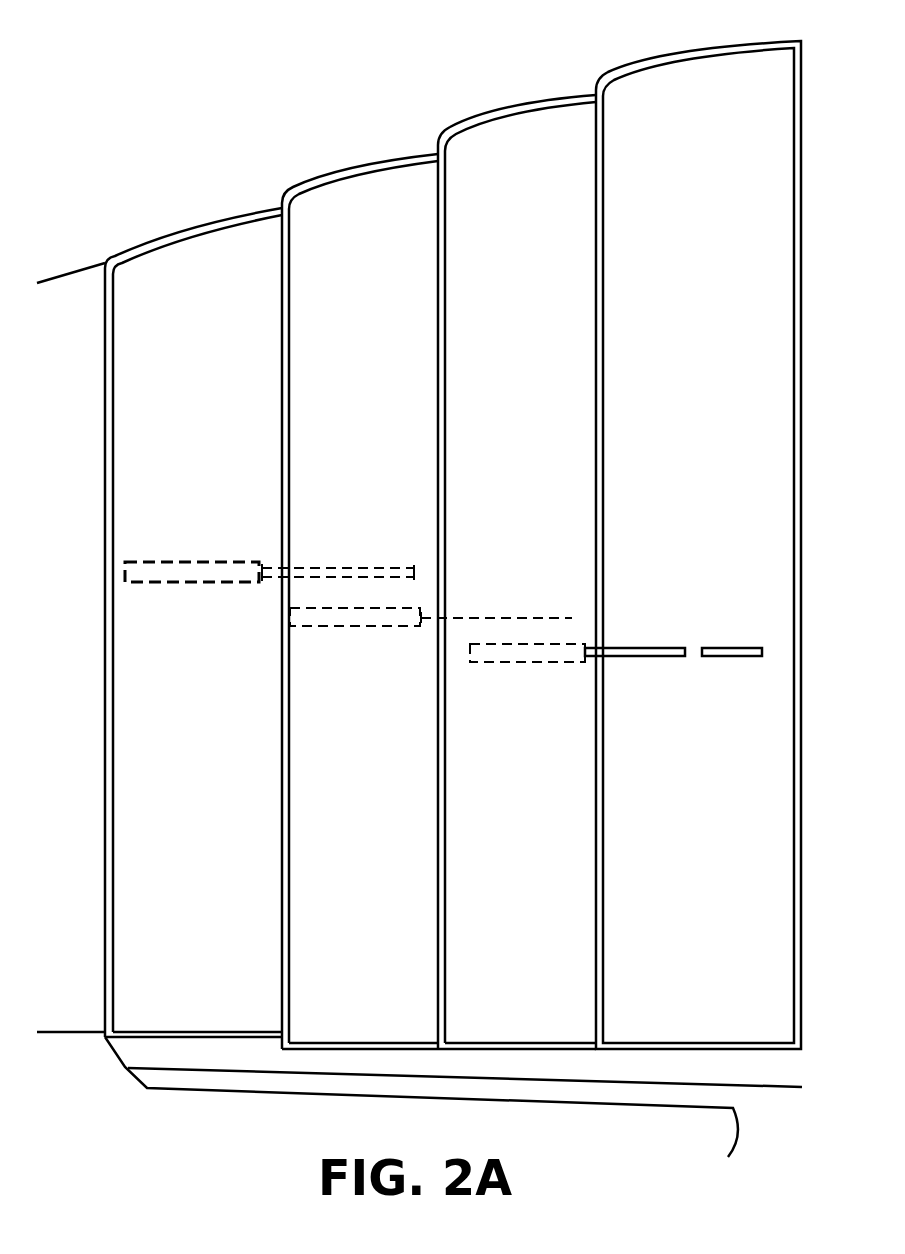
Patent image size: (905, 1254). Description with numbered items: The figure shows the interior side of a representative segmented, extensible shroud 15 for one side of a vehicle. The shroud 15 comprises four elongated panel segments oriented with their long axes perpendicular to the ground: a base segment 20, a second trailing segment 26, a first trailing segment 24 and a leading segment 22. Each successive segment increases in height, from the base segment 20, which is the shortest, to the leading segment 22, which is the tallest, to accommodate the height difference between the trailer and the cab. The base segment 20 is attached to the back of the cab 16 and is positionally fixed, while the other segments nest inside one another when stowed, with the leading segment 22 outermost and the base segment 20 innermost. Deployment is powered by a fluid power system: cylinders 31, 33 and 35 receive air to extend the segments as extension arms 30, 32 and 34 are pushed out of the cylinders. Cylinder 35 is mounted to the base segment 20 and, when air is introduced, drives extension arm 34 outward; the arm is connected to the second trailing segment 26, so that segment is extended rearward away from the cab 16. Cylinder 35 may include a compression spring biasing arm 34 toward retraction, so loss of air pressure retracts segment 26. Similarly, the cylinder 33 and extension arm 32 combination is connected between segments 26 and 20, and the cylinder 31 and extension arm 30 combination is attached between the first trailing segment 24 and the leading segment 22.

The segmented extensible shroud 15 is at (390, 90).
The cab 16 is at (65, 293).
The base segment 20 is at (215, 277).
The leading segment 22 is at (703, 93).
The first trailing segment 24 is at (542, 143).
The second trailing segment 26 is at (410, 205).
The extension arm 30 is at (710, 657).
The cylinder 31 is at (543, 653).
The extension arm 32 is at (545, 618).
The cylinder 33 is at (385, 622).
The extension arm 34 is at (378, 570).
The cylinder 35 is at (240, 572).